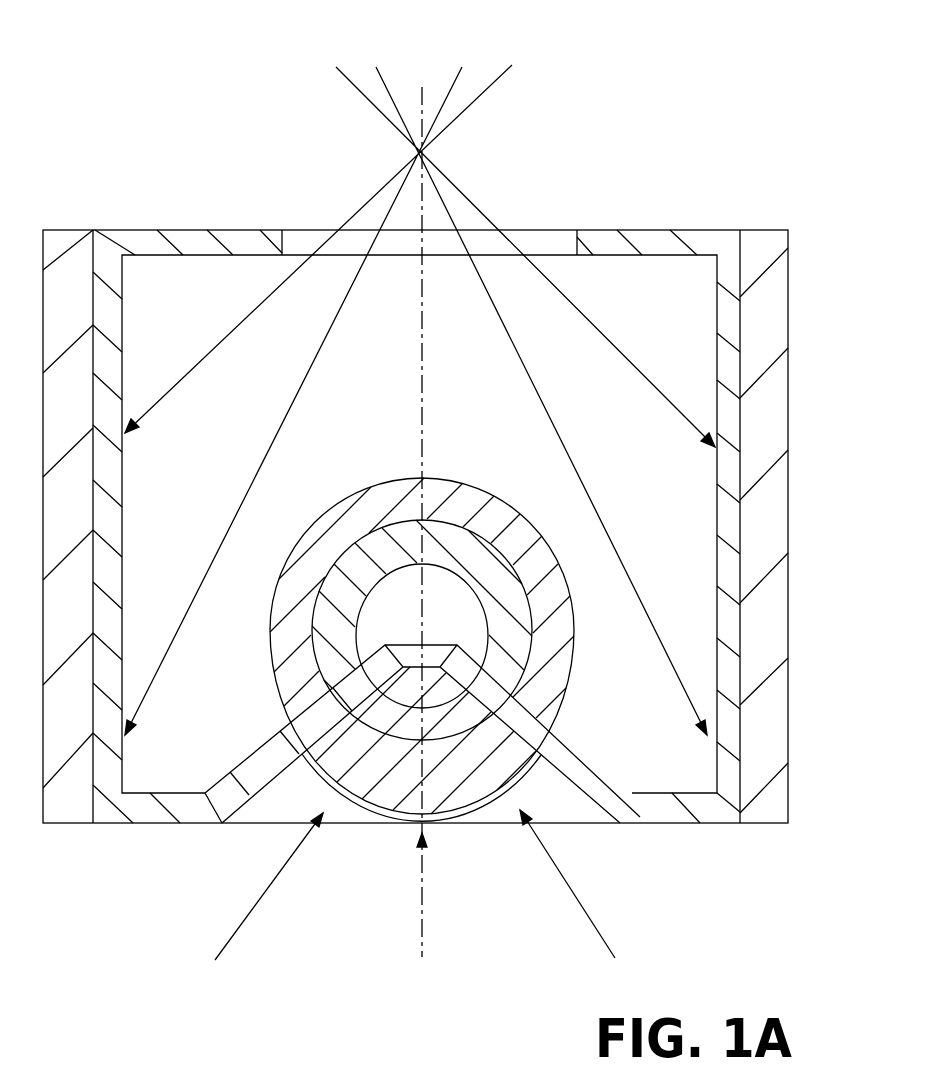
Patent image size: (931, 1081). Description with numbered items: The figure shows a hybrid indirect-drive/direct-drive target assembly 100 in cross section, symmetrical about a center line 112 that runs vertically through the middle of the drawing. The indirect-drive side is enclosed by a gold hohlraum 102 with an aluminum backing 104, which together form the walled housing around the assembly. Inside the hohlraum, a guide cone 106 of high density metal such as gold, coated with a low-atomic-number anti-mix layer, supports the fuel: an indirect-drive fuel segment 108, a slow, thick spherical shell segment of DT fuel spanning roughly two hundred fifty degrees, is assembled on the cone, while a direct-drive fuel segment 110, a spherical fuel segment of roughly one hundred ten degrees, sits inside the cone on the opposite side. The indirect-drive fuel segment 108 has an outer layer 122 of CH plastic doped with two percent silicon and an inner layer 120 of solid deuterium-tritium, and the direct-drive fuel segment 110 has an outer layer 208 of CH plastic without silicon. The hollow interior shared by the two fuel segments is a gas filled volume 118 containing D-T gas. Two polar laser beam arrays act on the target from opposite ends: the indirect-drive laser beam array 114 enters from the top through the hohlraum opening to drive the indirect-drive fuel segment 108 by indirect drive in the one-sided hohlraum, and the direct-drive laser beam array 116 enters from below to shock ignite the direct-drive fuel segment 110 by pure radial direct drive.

The hybrid indirect-drive/direct-drive target assembly 100 is at (697, 128).
The gold hohlraum 102 is at (122, 333).
The aluminum backing 104 is at (770, 230).
The guide cone 106 is at (592, 752).
The indirect-drive fuel segment 108 is at (462, 466).
The direct-drive fuel segment 110 is at (363, 807).
The center line 112 is at (420, 377).
The indirect-drive laser beam array 114 is at (617, 62).
The direct-drive laser beam array 116 is at (172, 952).
The gas filled volume 118 is at (380, 628).
The inner layer of solid deuterium-tritium 120 is at (330, 605).
The outer layer of CH plastic with 2% Si 122 is at (327, 513).
The outer layer of CH plastic 208 is at (293, 812).